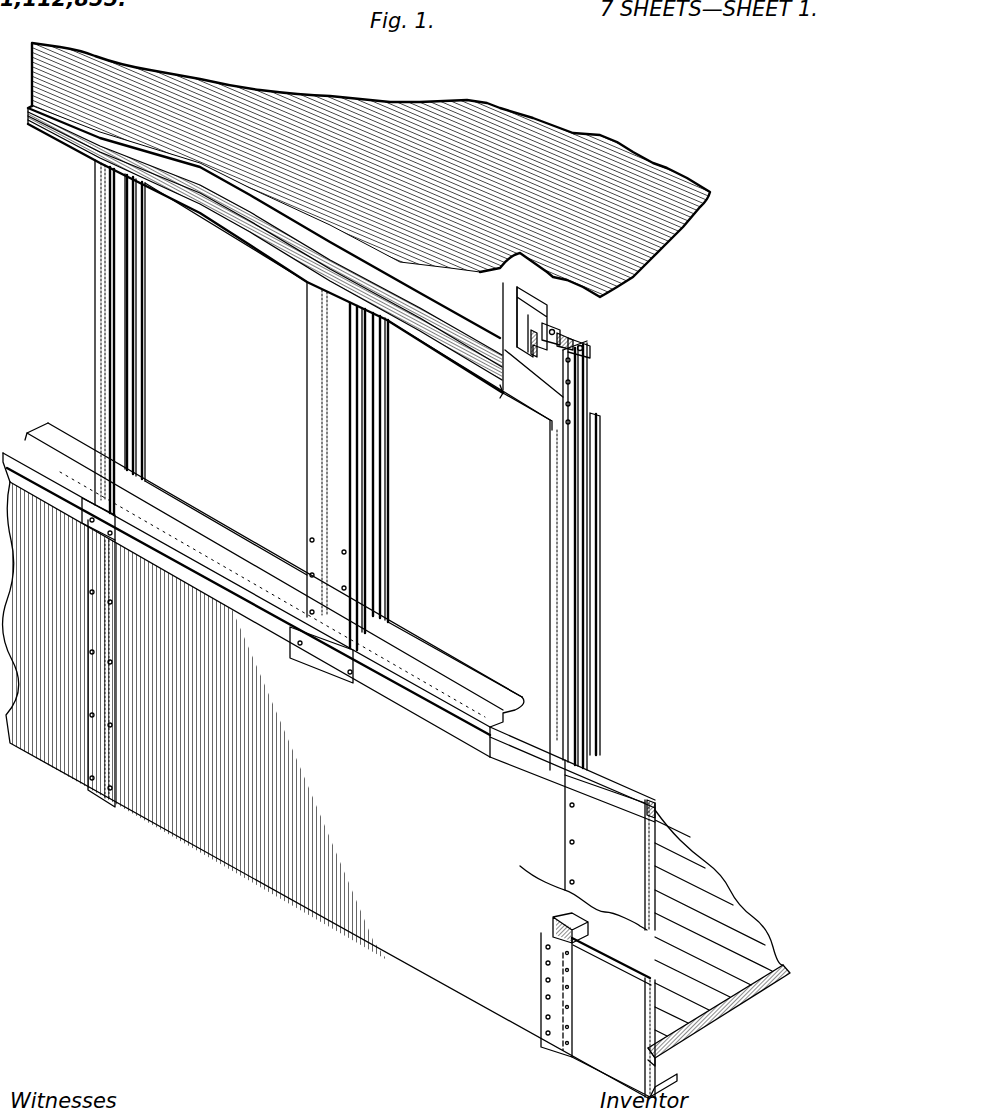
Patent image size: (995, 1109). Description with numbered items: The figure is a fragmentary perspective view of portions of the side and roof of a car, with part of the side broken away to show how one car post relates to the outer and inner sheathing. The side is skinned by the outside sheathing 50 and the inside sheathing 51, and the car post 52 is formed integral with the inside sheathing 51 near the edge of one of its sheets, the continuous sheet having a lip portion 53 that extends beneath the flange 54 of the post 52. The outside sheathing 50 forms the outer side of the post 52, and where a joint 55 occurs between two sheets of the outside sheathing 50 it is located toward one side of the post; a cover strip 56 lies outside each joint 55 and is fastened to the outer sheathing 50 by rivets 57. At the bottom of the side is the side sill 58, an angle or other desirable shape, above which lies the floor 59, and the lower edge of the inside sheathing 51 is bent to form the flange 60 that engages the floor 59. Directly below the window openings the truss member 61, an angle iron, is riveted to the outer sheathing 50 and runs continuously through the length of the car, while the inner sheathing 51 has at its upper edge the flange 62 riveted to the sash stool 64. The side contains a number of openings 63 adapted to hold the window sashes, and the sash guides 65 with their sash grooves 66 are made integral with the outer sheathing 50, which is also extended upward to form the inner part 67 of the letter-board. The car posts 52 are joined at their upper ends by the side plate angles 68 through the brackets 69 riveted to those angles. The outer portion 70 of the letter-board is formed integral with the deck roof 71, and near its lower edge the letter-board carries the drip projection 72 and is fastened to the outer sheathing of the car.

The outside sheathing 50 is at (408, 953).
The inside sheathing 51 is at (657, 820).
The car post 52 is at (527, 880).
The lip portion 53 is at (573, 940).
The flange 54 is at (570, 390).
The joint 55 is at (565, 1055).
The cover strip 56 is at (100, 785).
The rivets 57 is at (542, 983).
The side sill 58 is at (678, 1083).
The floor 59 is at (739, 997).
The flange 60 is at (665, 1046).
The truss member 61 is at (618, 810).
The flange 62 is at (653, 806).
The openings 63 is at (347, 476).
The sash stool 64 is at (390, 677).
The sash guides 65 is at (128, 330).
The sash grooves 66 is at (592, 503).
The inner part of the letter-board 67 is at (532, 393).
The side plate angles 68 is at (528, 317).
The brackets 69 is at (567, 332).
The outer portion of the letter-board 70 is at (453, 338).
The deck roof 71 is at (556, 180).
The drip projection 72 is at (495, 382).